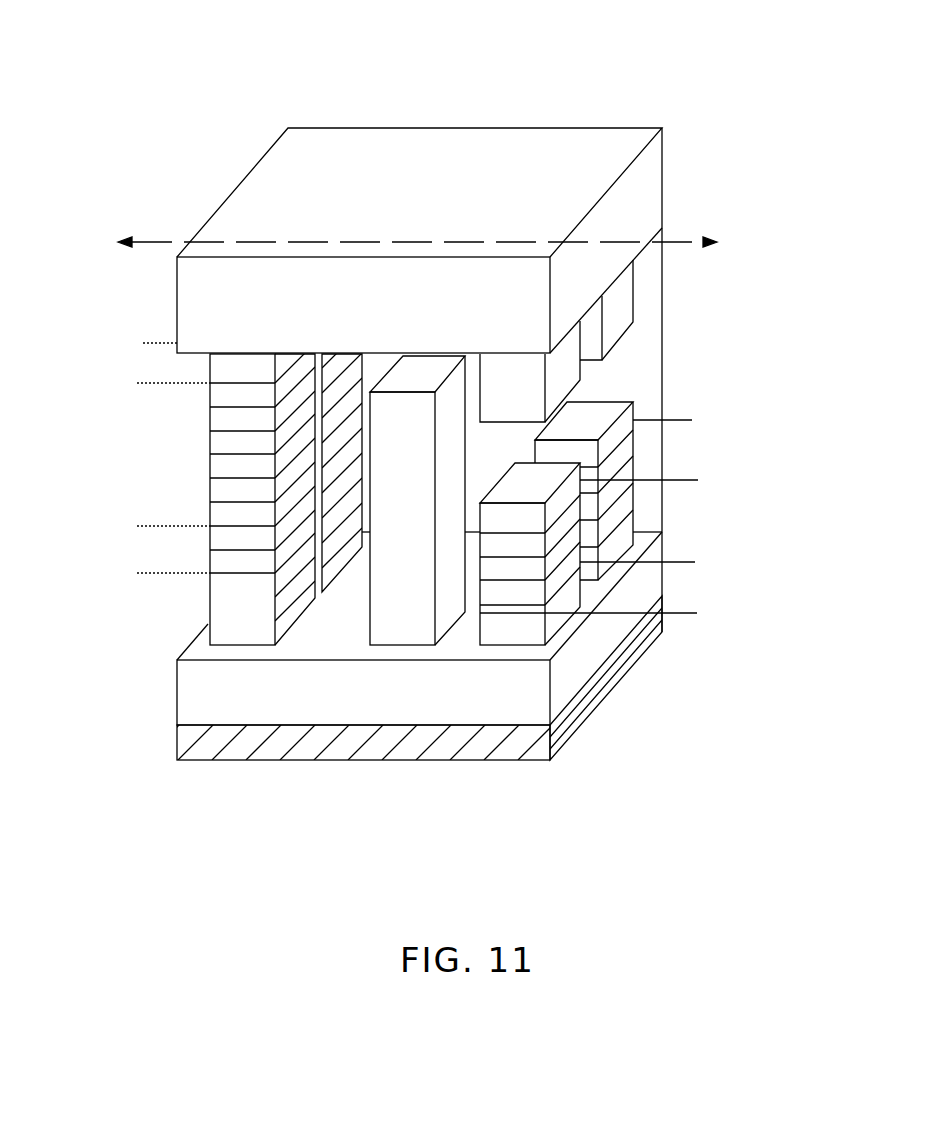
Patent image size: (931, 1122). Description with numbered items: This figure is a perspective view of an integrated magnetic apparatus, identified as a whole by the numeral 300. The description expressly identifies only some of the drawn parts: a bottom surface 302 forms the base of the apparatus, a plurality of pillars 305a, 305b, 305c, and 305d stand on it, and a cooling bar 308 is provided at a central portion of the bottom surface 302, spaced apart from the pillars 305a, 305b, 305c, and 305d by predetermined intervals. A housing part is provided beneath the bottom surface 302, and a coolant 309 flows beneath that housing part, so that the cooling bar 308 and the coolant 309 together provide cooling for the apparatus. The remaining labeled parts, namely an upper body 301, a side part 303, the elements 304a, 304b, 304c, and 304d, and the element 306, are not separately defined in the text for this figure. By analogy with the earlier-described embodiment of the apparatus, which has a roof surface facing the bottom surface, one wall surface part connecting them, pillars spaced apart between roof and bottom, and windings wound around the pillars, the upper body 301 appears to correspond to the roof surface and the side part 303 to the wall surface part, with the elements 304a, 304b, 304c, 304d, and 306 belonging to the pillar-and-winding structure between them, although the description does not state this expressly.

The semiconductor memory device 300 is at (578, 66).
The upper insulating layer 301 is at (657, 177).
The bottom surface 302 is at (480, 713).
The conductive plug 303 is at (655, 290).
The first pillar 304a is at (303, 603).
The second pillar 304b is at (335, 550).
The third pillar 304c is at (558, 623).
The fourth pillar 304d is at (610, 573).
The pillar 305a is at (150, 383).
The pillar 305b is at (143, 343).
The pillar 305c is at (683, 614).
The pillar 305d is at (683, 420).
The insulating layer 306 is at (636, 361).
The cooling bar 308 is at (408, 628).
The coolant 309 is at (205, 757).